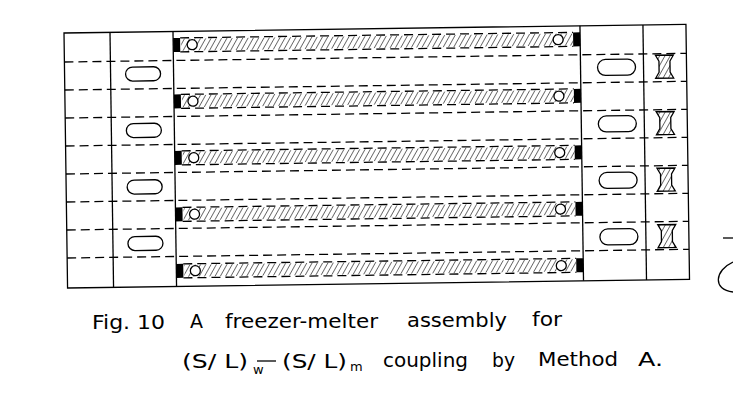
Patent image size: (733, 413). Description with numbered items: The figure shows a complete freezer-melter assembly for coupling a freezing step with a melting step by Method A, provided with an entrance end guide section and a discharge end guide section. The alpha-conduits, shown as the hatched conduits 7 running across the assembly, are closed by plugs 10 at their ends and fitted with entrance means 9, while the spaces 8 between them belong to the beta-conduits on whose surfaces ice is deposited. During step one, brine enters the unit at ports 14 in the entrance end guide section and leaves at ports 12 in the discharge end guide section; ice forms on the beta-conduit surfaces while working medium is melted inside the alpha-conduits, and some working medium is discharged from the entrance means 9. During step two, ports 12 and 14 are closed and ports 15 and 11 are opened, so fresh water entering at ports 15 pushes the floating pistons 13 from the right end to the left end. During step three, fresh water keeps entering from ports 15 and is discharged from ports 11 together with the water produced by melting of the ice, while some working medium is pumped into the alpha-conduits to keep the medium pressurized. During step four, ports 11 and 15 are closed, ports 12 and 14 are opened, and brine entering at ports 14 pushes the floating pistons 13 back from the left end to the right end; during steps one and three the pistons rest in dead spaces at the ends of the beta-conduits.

The hatched heat transfer layer 7 is at (285, 46).
The fluid passage 8 is at (328, 74).
The entrance means 9 is at (193, 46).
The plug 10 is at (176, 44).
The port 11 is at (146, 73).
The port 12 is at (612, 74).
The floating piston 13 is at (670, 76).
The port 14 is at (69, 75).
The port 15 is at (669, 120).